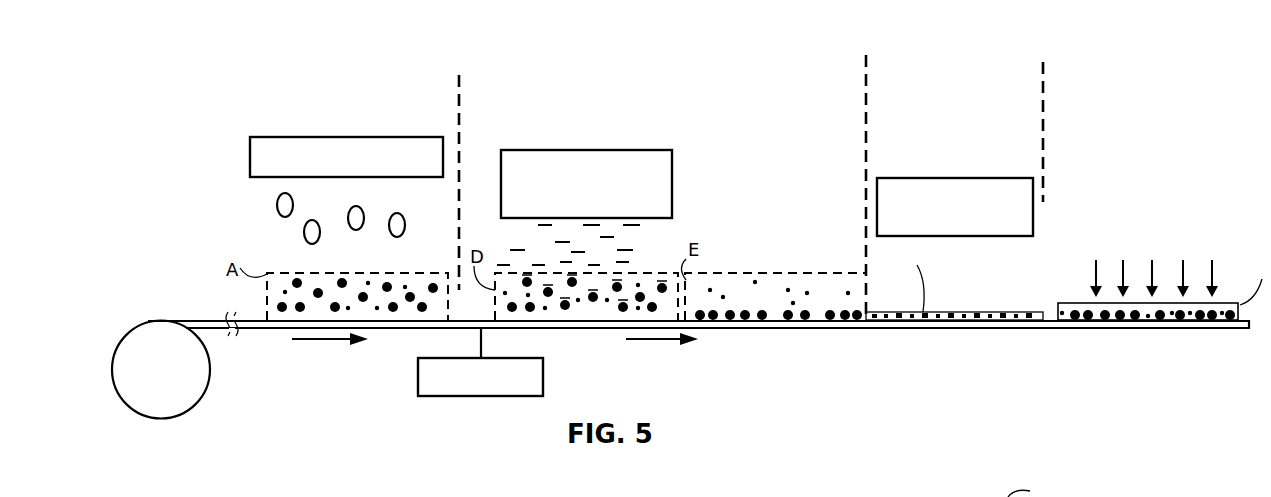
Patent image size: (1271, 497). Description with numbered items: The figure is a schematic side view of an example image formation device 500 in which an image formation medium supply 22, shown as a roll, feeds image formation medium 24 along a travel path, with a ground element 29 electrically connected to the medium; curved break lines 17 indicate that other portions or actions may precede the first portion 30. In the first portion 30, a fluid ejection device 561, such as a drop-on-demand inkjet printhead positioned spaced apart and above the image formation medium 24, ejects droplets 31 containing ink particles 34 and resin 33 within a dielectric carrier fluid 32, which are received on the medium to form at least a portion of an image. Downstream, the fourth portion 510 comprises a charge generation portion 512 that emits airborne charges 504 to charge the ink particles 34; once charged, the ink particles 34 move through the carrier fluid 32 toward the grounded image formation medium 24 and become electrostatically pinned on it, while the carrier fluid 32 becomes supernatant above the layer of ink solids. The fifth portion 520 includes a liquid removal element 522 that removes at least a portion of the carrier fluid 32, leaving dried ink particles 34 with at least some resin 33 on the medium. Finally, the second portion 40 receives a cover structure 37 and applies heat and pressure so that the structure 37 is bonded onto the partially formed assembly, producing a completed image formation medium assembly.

The image formation device 500 is at (165, 148).
The first portion 30 is at (346, 204).
The fourth portion 510 is at (680, 201).
The fifth portion 520 is at (954, 194).
The second portion 40 is at (1139, 183).
The image formation medium supply 22 is at (100, 375).
The image formation medium 24 is at (216, 318).
The curved break lines 17 is at (238, 336).
The ground element 29 is at (418, 377).
The fluid ejection device 561 is at (236, 157).
The droplets 31 is at (255, 208).
The charge generation portion 512 is at (655, 150).
The airborne charges 504 is at (637, 263).
The liquid removal element 522 is at (955, 178).
The structure 37 is at (1229, 304).
The carrier fluid 32 is at (427, 278).
The resin 33 is at (375, 283).
The ink particles 34 is at (325, 290).